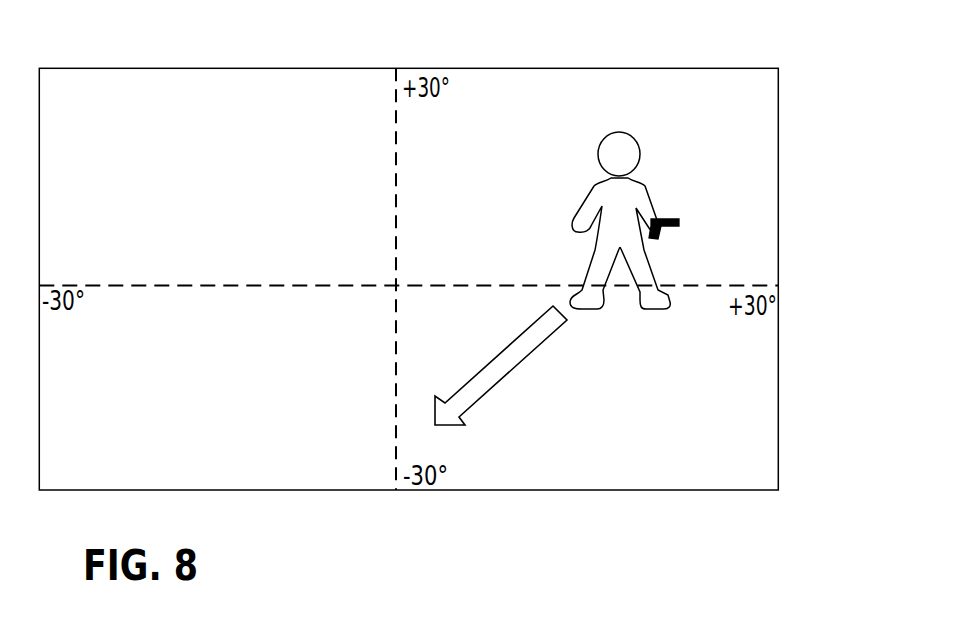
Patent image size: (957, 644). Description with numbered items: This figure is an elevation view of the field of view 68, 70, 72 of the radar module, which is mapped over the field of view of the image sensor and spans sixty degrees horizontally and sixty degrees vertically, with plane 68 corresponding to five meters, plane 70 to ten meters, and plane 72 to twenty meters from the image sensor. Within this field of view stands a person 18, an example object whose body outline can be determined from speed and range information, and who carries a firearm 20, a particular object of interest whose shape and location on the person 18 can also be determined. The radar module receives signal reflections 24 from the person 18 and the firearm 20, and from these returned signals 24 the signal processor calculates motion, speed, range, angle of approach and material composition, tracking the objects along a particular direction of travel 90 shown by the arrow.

The plane of the field of view 68 is at (455, 245).
The plane of the field of view 70 is at (443, 260).
The plane of the field of view 72 is at (755, 68).
The person 18 is at (672, 300).
The firearm 20 is at (677, 222).
The signal reflections 24 is at (640, 160).
The direction of travel 90 is at (478, 396).